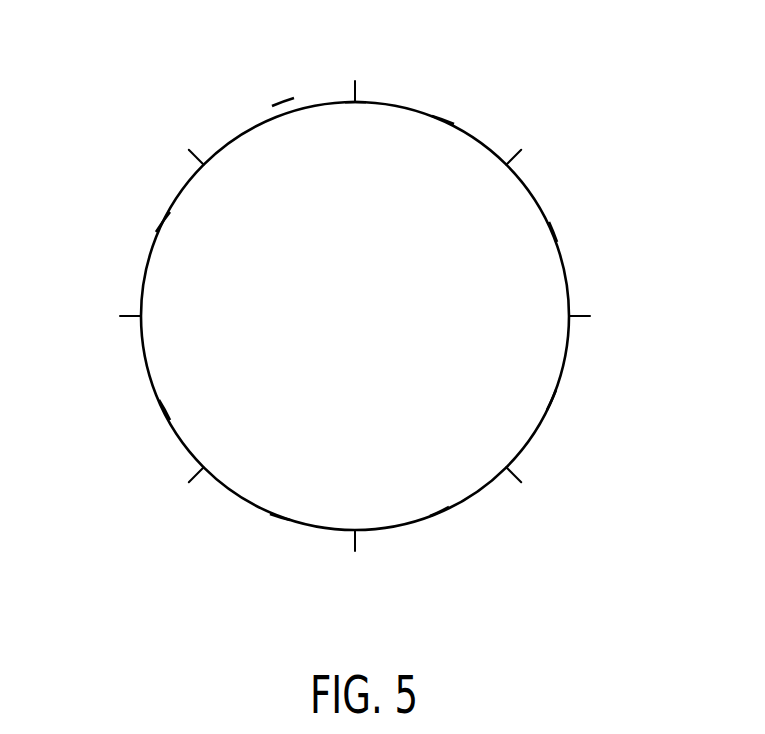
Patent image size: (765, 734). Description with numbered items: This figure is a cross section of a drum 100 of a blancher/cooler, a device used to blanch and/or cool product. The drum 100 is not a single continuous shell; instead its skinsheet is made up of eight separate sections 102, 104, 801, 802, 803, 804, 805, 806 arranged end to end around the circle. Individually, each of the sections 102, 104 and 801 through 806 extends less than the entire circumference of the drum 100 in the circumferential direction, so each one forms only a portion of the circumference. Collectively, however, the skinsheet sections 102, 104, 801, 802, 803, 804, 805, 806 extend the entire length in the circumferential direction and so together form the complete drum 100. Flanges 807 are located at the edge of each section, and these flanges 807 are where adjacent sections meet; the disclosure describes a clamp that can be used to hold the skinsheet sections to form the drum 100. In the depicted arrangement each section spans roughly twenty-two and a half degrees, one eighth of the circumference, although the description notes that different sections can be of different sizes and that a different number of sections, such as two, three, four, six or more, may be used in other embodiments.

The drum 100 is at (147, 478).
The section 102 is at (283, 112).
The section 104 is at (443, 118).
The section 801 is at (162, 222).
The section 802 is at (163, 410).
The section 803 is at (280, 518).
The section 804 is at (440, 512).
The section 805 is at (552, 400).
The section 806 is at (553, 232).
The flanges 807 is at (358, 90).